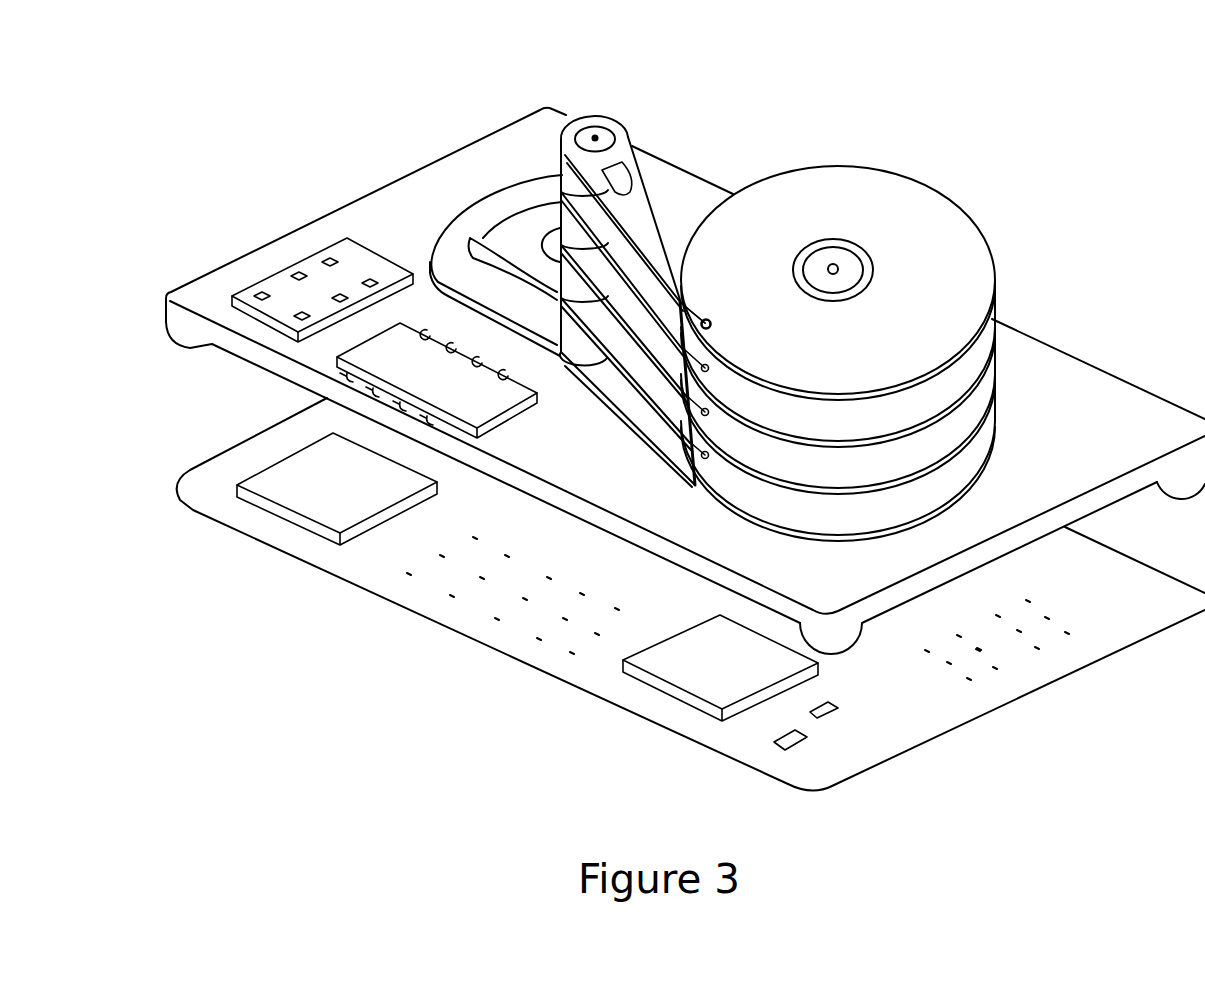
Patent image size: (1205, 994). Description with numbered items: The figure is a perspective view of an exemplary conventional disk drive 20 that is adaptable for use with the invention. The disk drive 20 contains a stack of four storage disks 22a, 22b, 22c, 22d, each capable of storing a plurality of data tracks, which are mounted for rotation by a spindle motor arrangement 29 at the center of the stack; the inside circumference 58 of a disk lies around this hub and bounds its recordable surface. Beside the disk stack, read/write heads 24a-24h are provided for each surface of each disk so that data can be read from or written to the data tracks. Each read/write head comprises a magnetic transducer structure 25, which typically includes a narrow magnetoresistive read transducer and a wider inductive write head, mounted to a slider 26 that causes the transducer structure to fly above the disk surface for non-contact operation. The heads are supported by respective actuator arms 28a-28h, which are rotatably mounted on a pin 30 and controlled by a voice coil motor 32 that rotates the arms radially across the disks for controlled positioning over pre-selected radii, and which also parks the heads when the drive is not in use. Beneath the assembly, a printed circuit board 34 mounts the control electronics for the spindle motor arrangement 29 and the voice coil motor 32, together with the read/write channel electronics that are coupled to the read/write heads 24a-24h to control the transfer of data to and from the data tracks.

The disk drive 20 is at (276, 192).
The storage disk 22a is at (990, 253).
The storage disk 22b is at (998, 320).
The storage disk 22c is at (1005, 378).
The storage disk 22d is at (1000, 427).
The read/write heads 24a-24h is at (710, 318).
The magnetic transducer structure 25 is at (710, 345).
The slider 26 is at (712, 323).
The actuator arms 28a-28h is at (648, 218).
The spindle motor arrangement 29 is at (836, 264).
The pin 30 is at (592, 135).
The voice coil motor 32 is at (488, 212).
The printed circuit board 34 is at (940, 713).
The inside circumference 58 is at (875, 267).